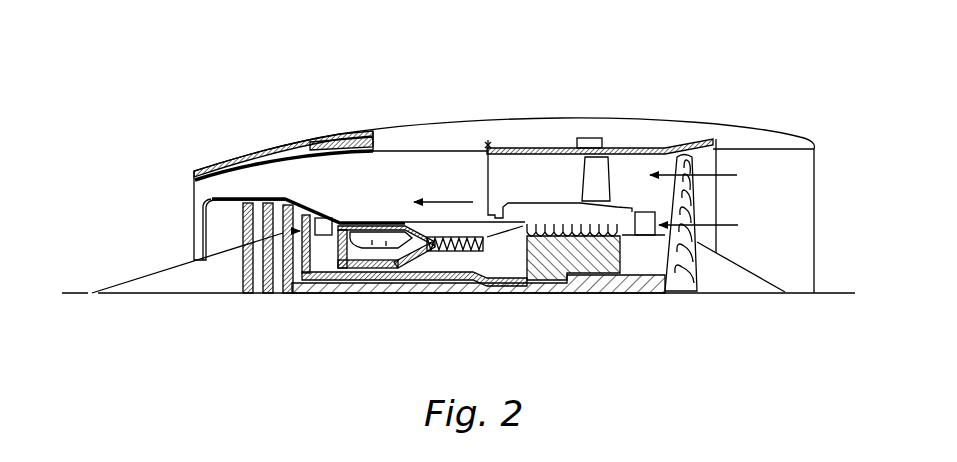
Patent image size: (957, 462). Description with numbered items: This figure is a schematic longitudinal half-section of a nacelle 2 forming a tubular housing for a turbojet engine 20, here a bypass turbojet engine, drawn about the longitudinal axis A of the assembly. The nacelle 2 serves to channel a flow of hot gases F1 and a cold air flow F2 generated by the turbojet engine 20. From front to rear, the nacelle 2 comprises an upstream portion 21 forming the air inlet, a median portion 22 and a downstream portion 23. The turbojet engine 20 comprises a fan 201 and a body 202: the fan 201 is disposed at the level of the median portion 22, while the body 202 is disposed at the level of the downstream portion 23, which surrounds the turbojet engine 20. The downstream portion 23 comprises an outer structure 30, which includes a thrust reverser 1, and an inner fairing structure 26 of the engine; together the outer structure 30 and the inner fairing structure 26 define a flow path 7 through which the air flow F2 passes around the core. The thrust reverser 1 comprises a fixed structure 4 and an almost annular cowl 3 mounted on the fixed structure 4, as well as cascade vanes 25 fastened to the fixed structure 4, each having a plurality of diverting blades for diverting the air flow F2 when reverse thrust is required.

The thrust reverser 1 is at (339, 107).
The nacelle 2 is at (756, 79).
The cowl 3 is at (232, 155).
The fixed structure 4 is at (374, 137).
The flow path 7 is at (386, 202).
The turbojet engine 20 is at (523, 304).
The upstream portion 21 is at (783, 136).
The median portion 22 is at (561, 116).
The downstream portion 23 is at (272, 140).
The cascade vanes 25 is at (362, 134).
The inner fairing structure 26 is at (352, 221).
The outer structure 30 is at (338, 161).
The fan 201 is at (667, 202).
The body 202 is at (461, 302).
The longitudinal axis A is at (133, 296).
The flow of hot gases F1 is at (220, 235).
The cold air flow F2 is at (585, 200).